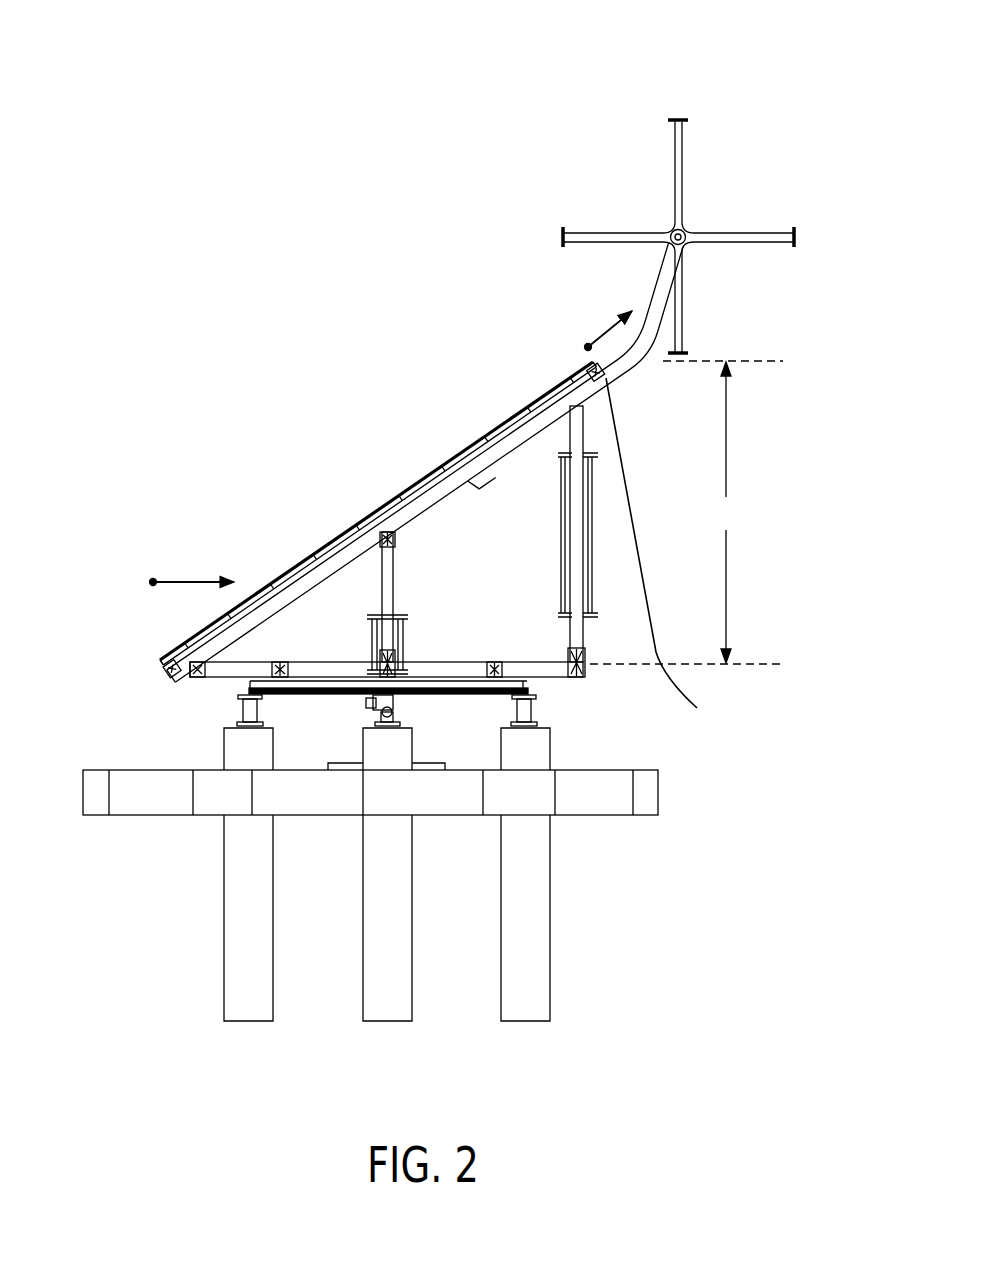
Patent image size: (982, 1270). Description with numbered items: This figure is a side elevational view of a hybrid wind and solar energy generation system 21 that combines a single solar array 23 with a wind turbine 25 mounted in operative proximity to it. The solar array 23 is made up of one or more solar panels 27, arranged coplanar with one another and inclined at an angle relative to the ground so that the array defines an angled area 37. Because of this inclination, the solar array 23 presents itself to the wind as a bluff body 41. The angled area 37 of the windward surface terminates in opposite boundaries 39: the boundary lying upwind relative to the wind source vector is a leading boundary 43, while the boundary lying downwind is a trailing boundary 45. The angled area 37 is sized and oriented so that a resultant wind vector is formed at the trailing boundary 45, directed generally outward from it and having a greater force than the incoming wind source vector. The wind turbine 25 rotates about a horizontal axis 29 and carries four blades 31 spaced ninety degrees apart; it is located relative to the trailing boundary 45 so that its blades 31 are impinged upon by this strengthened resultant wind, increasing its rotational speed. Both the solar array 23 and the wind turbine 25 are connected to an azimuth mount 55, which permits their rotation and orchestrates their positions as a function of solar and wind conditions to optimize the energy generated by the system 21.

The hybrid wind and solar energy generation system 21 is at (352, 405).
The solar array 23 is at (296, 548).
The wind turbine 25 is at (677, 102).
The solar panel 27 is at (460, 446).
The horizontal axis 29 is at (686, 232).
The blade 31 is at (563, 237).
The angled area 37 is at (360, 508).
The boundary 39 is at (563, 371).
The bluff body 41 is at (686, 512).
The leading boundary 43 is at (162, 676).
The trailing boundary 45 is at (592, 358).
The azimuth mount 55 is at (538, 680).